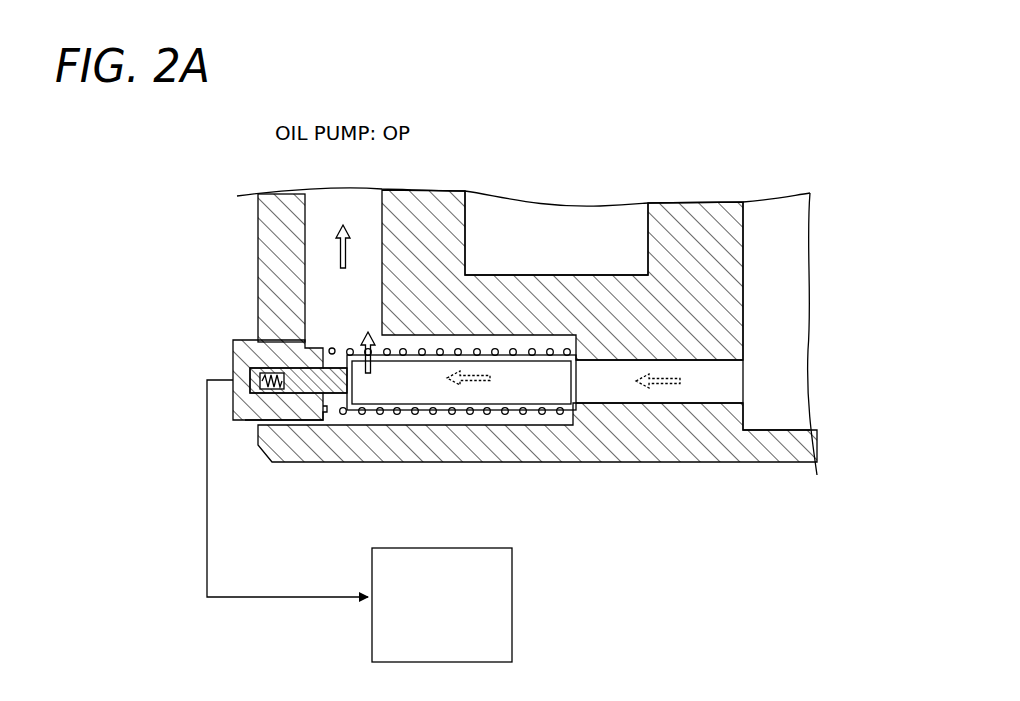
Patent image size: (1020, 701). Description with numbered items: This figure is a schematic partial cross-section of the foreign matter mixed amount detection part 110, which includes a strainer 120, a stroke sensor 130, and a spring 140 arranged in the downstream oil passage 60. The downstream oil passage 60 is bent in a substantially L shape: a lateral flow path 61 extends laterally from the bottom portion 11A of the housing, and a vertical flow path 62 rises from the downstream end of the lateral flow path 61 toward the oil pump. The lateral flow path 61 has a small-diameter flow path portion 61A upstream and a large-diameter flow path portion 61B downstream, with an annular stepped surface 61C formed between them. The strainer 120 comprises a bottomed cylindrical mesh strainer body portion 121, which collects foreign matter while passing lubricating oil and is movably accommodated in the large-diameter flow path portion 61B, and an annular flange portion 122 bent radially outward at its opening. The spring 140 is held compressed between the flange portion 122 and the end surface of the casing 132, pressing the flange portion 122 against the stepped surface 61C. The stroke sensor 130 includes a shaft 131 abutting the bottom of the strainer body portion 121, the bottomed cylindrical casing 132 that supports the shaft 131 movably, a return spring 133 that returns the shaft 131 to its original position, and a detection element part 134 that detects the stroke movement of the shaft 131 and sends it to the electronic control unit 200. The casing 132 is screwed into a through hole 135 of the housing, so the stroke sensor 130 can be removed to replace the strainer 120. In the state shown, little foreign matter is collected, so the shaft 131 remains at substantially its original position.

The downstream oil passage 60 is at (548, 124).
The lateral flow path 61 is at (503, 344).
The small-diameter flow path portion 61A is at (633, 405).
The large-diameter flow path portion 61B is at (473, 418).
The annular stepped surface 61C is at (568, 352).
The vertical flow path 62 is at (365, 222).
The bottom portion of the housing 11A is at (776, 316).
The foreign matter mixed amount detection part 110 is at (190, 490).
The strainer 120 is at (455, 441).
The strainer body portion 121 is at (438, 410).
The annular flange portion 122 is at (562, 413).
The stroke sensor 130 is at (253, 399).
The shaft 131 is at (308, 455).
The casing 132 is at (232, 362).
The return spring 133 is at (252, 337).
The detection element part 134 is at (250, 415).
The through hole 135 is at (272, 458).
The spring 140 is at (387, 413).
The electronic control unit 200 is at (442, 605).